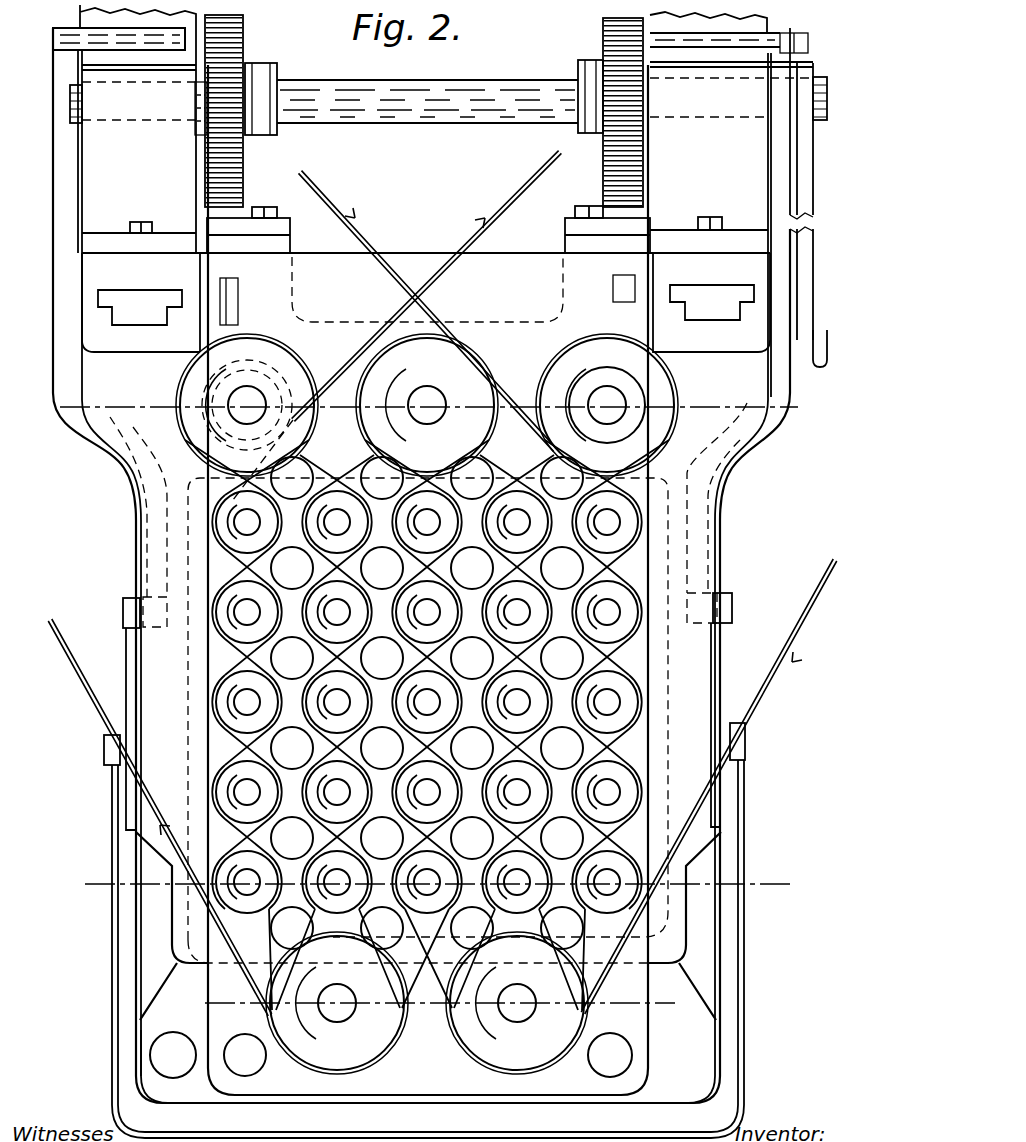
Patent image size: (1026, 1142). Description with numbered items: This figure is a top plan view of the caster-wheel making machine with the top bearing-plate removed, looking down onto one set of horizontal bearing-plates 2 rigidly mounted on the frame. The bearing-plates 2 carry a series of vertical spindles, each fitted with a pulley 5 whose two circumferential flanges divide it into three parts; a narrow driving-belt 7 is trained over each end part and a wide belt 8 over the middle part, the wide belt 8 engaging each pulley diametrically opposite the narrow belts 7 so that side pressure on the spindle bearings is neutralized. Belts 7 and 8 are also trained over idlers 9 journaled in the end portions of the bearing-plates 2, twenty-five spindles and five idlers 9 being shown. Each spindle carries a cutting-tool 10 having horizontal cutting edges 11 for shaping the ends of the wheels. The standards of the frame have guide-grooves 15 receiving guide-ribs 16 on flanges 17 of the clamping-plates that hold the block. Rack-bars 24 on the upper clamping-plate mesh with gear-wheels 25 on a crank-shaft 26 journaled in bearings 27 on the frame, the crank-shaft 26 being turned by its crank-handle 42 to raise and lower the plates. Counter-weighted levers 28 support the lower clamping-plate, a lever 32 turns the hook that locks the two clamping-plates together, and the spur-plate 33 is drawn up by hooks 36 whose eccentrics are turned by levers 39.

The bearing-plate 2 is at (310, 268).
The pulley 5 is at (513, 513).
The narrow driving-belt 7 is at (372, 232).
The wide belt 8 is at (521, 190).
The idler 9 is at (277, 372).
The cutting-tool 10 is at (423, 410).
The horizontal cutting edges 11 is at (438, 1003).
The guide-groove 15 is at (113, 285).
The guide-rib 16 is at (156, 300).
The flange 17 is at (131, 349).
The rack-bar 24 is at (236, 222).
The gear-wheel 25 is at (243, 46).
The crank-shaft 26 is at (456, 124).
The bearing 27 is at (447, 147).
The counter-weighted lever 28 is at (67, 205).
The lever 32 is at (126, 812).
The plate 33 is at (127, 1018).
The hook 36 is at (108, 783).
The lever 39 is at (112, 932).
The crank-handle 42 is at (813, 320).